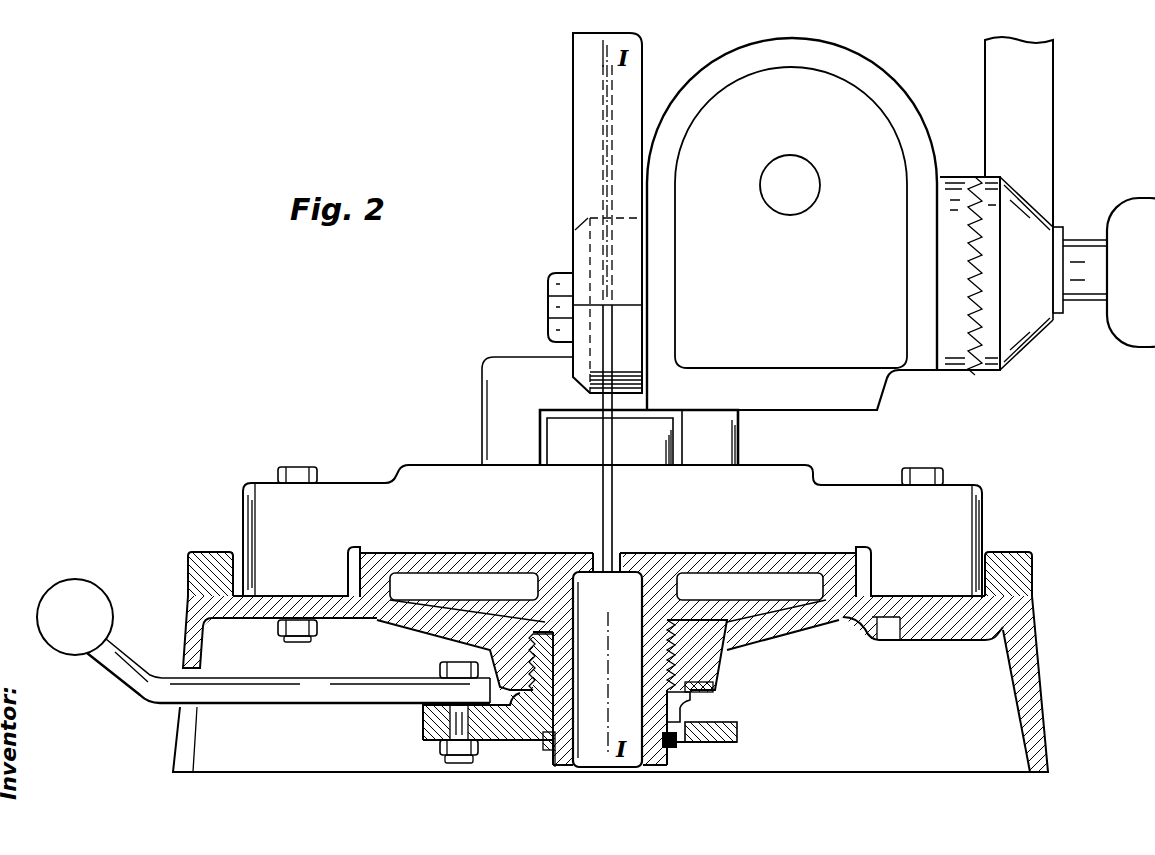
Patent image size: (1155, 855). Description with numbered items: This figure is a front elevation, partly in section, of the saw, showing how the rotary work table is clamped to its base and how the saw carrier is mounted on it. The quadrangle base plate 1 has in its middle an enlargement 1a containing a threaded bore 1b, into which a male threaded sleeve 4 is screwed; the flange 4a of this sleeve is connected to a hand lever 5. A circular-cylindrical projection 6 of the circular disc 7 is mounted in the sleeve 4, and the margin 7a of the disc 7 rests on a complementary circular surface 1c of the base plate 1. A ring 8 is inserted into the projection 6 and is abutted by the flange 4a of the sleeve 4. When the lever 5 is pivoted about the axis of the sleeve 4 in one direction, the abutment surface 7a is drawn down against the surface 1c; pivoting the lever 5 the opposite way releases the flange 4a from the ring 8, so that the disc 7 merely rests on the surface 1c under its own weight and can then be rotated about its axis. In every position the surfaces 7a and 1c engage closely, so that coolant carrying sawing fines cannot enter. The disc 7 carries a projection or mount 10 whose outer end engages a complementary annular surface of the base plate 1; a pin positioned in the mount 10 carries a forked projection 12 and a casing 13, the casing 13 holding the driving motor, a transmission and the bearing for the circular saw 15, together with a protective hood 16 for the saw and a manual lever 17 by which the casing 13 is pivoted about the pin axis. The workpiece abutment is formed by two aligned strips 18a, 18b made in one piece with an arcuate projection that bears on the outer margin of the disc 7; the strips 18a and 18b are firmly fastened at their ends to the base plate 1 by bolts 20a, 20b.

The base plate 1 is at (1033, 685).
The enlargement 1a is at (717, 668).
The threaded bore 1b is at (714, 687).
The complementary circular surface 1c is at (370, 603).
The male threaded sleeve 4 is at (690, 710).
The flange 4a is at (738, 736).
The hand lever 5 is at (322, 693).
The circular-cylindrical projection 6 is at (563, 756).
The circular disc 7 is at (430, 553).
The margin 7a is at (365, 592).
The ring 8 is at (674, 746).
The projection or mount 10 is at (555, 433).
The forked projection 12 is at (505, 362).
The casing 13 is at (708, 78).
The circular saw 15 is at (603, 167).
The protective hood 16 is at (573, 97).
The manual lever 17 is at (1042, 97).
The strip 18a is at (246, 505).
The strip 18b is at (985, 497).
The bolt 20a is at (278, 467).
The bolt 20b is at (925, 468).